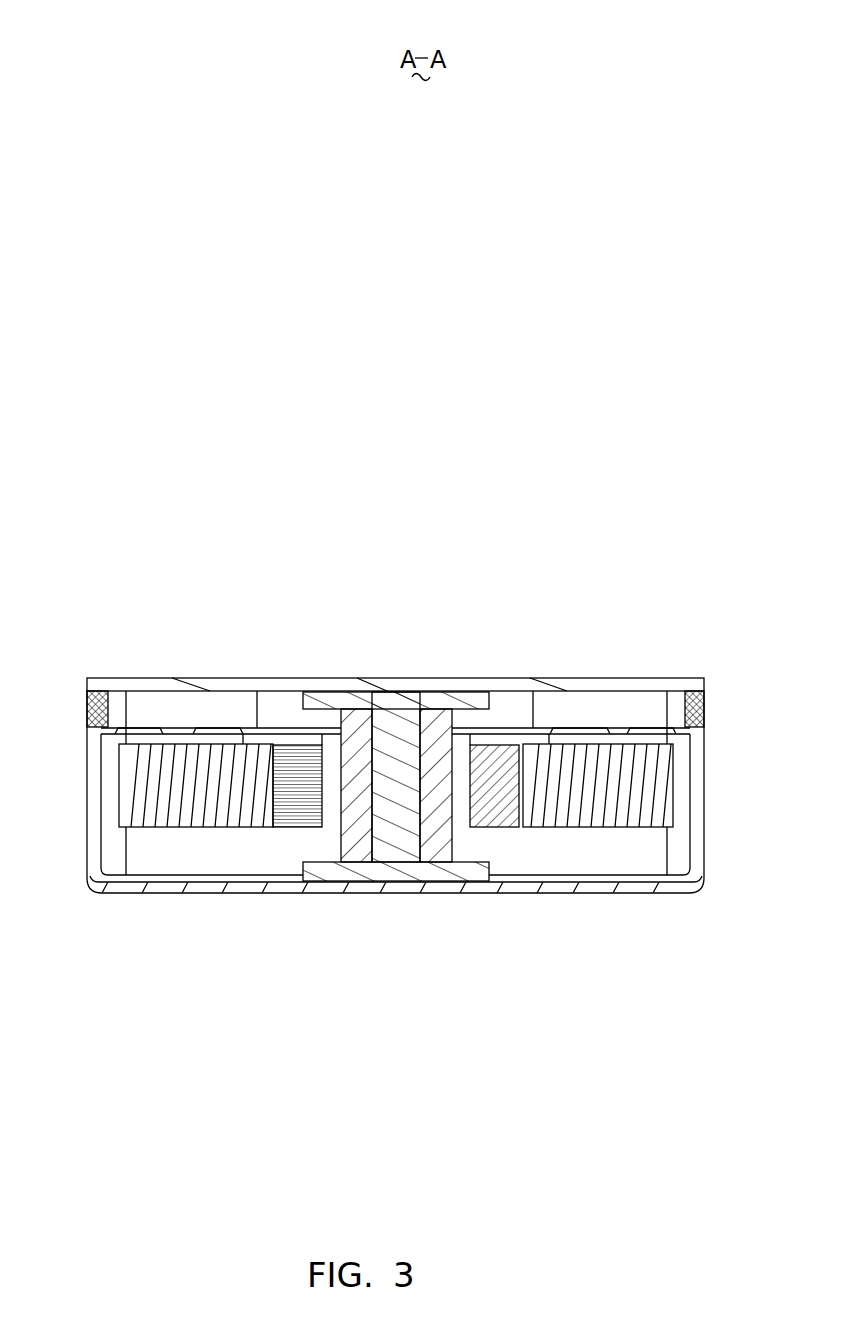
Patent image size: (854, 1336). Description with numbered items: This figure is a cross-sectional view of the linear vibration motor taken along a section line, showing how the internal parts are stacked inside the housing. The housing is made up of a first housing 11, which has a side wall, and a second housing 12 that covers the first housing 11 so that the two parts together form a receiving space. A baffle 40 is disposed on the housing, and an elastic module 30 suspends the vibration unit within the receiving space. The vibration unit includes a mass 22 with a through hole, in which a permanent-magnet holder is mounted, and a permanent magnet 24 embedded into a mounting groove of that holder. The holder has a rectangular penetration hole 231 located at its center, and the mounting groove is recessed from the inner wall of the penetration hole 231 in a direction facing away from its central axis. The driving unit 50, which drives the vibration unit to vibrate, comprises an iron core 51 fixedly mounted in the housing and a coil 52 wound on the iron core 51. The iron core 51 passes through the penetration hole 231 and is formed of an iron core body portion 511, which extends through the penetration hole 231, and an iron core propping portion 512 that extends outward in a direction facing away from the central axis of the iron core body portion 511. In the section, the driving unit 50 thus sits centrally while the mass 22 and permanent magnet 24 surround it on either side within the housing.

The first housing 11 is at (699, 824).
The second housing 12 is at (640, 685).
The mass 22 is at (220, 762).
The permanent magnet 24 is at (293, 762).
The elastic module 30 is at (110, 731).
The baffle 40 is at (705, 706).
The driving unit 50 is at (405, 870).
The iron core 51 is at (405, 850).
The iron core body portion 511 is at (397, 830).
The iron core propping portion 512 is at (460, 873).
The coil 52 is at (355, 837).
The penetration hole 231 is at (331, 730).